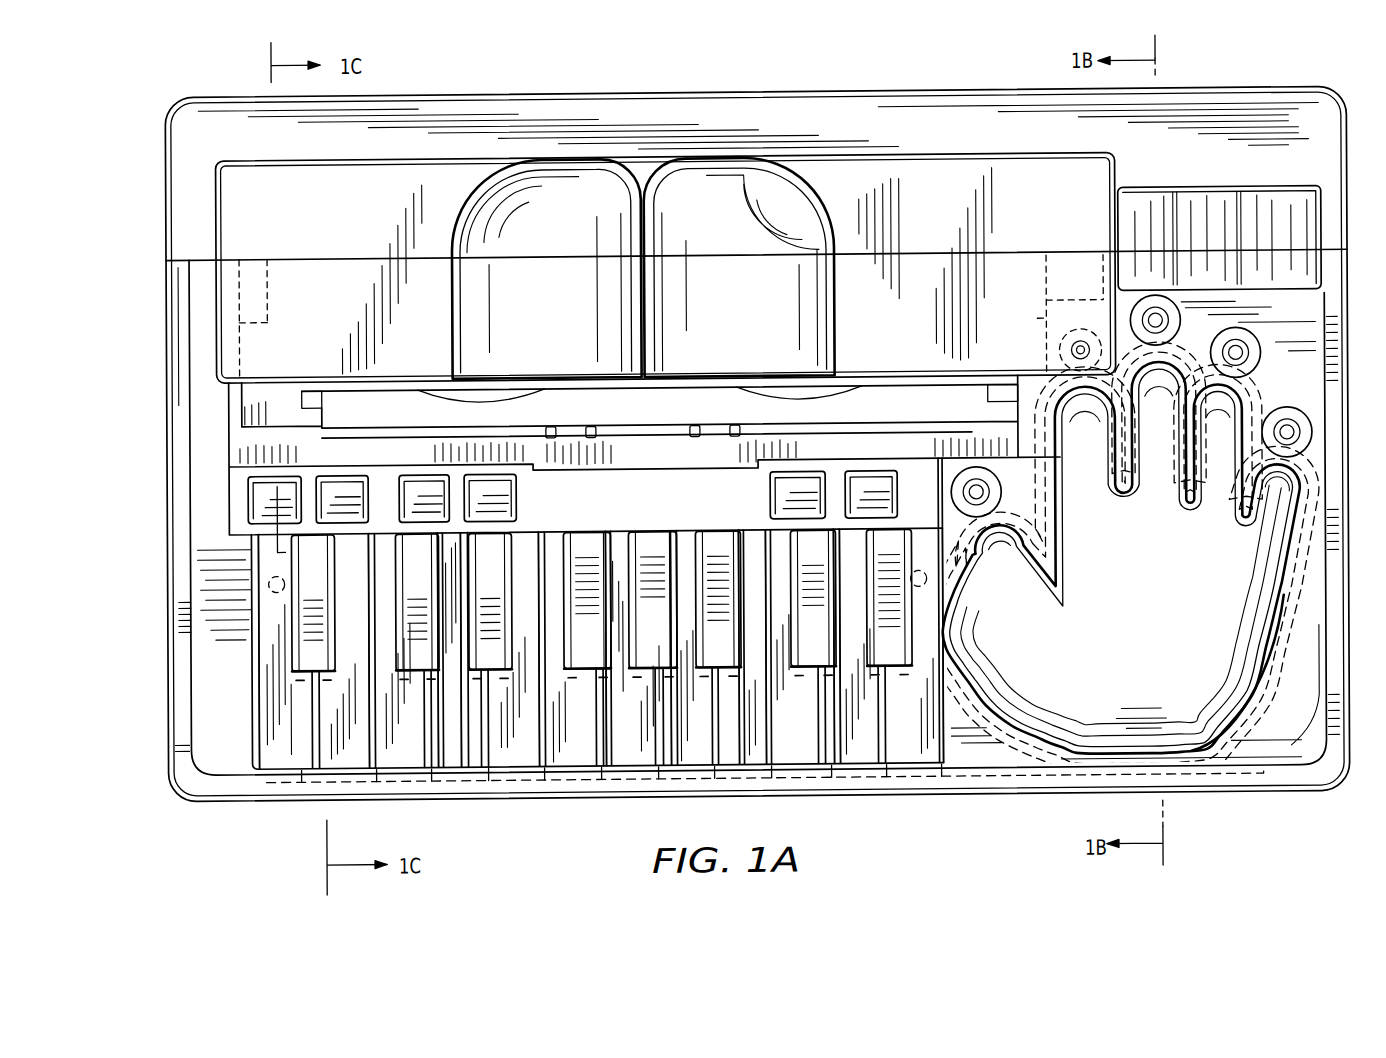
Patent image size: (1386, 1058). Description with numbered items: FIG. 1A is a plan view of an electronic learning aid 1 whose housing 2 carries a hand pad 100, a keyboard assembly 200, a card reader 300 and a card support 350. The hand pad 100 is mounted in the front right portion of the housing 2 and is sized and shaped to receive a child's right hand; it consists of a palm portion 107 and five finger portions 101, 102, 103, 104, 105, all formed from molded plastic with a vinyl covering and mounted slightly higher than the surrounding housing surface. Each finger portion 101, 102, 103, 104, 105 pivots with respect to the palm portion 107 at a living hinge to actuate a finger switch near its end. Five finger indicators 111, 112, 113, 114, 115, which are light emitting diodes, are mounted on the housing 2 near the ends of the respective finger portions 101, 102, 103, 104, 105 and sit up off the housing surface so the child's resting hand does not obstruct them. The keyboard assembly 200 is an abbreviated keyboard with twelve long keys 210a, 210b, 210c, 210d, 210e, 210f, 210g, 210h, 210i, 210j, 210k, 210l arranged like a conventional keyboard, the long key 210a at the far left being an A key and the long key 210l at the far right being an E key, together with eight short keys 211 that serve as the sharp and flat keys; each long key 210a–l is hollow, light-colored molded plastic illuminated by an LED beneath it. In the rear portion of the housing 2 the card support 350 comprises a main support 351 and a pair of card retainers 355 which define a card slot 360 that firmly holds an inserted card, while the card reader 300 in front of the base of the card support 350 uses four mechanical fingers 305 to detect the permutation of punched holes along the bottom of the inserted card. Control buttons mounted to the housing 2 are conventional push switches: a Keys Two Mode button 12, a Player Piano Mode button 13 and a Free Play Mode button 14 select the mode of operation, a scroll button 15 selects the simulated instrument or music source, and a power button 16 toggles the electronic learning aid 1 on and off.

The electronic learning aid 1 is at (212, 807).
The housing 2 is at (221, 746).
The Keys Two Mode button 12 is at (330, 492).
The Player Piano Mode button 13 is at (422, 492).
The Free Play Mode button 14 is at (505, 489).
The scroll button 15 is at (882, 483).
The power button 16 is at (772, 492).
The hand pad 100 is at (1079, 755).
The finger portion 101 is at (1020, 585).
The finger portion 102 is at (1099, 453).
The finger portion 103 is at (1173, 432).
The finger portion 104 is at (1236, 452).
The finger portion 105 is at (1286, 524).
The palm portion 107 is at (1158, 665).
The finger indicator 111 is at (978, 493).
The finger indicator 112 is at (1081, 352).
The finger indicator 113 is at (1158, 322).
The finger indicator 114 is at (1245, 348).
The finger indicator 115 is at (1292, 433).
The keyboard assembly 200 is at (757, 701).
The long key 210a is at (300, 790).
The long key 210b is at (362, 800).
The long key 210c is at (423, 804).
The long key 210d is at (476, 797).
The long key 210e is at (538, 800).
The long key 210f is at (600, 797).
The long key 210g is at (657, 797).
The long key 210h is at (713, 795).
The long key 210i is at (770, 797).
The long key 210j is at (830, 797).
The long key 210k is at (885, 797).
The long key 210l is at (940, 797).
The short key 211 is at (297, 645).
The card reader 300 is at (643, 418).
The mechanical finger 305 is at (736, 437).
The card support 350 is at (882, 153).
The main support 351 is at (896, 294).
The card retainer 355 is at (268, 410).
The card slot 360 is at (250, 403).